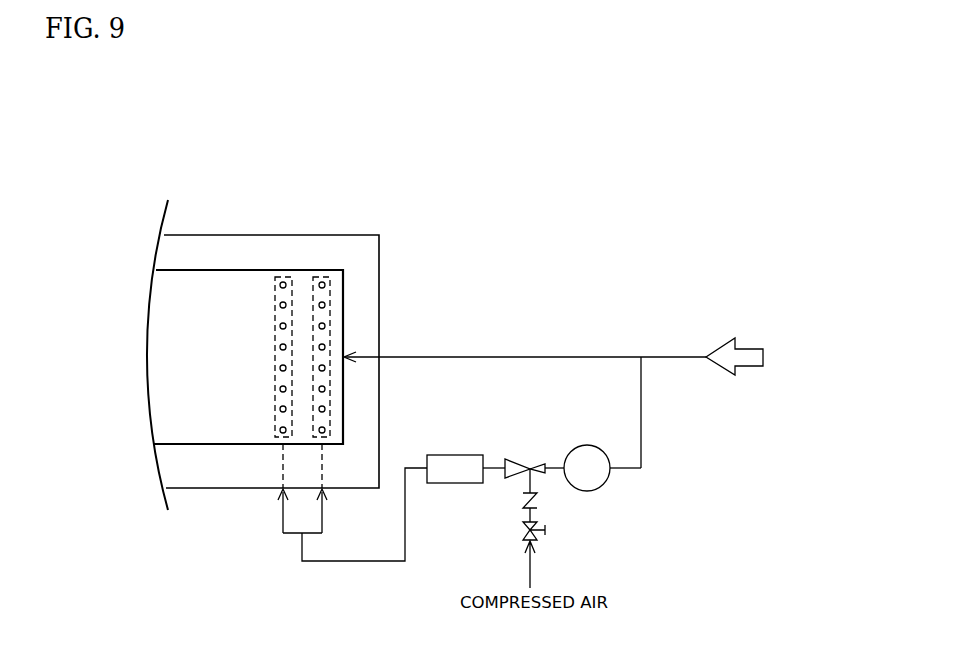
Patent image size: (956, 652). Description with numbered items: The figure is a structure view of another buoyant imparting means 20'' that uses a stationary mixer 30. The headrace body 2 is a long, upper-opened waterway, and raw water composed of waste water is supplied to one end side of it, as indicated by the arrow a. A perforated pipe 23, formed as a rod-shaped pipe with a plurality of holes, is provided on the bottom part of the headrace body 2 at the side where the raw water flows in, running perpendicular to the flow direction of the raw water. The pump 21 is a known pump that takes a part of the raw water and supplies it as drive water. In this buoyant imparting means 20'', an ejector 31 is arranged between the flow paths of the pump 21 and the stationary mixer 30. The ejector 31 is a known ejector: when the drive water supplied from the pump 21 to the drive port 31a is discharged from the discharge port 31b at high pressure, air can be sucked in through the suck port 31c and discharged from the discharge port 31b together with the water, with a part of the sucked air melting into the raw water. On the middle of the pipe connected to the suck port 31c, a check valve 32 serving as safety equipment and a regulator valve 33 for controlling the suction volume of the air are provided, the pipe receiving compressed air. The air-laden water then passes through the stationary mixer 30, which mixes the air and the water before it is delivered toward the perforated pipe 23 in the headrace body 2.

The headrace body 2 is at (304, 232).
The perforated pipe 23 is at (315, 403).
The stationary mixer 30 is at (452, 455).
The ejector 31 is at (528, 449).
The drive port 31a is at (543, 466).
The discharge port 31b is at (505, 462).
The suck port 31c is at (527, 477).
The check valve 32 is at (538, 501).
The regulator valve 33 is at (540, 534).
The pump 21 is at (597, 482).
The buoyant imparting means 20'' is at (735, 438).
The arrow indicating raw water supply a is at (748, 367).